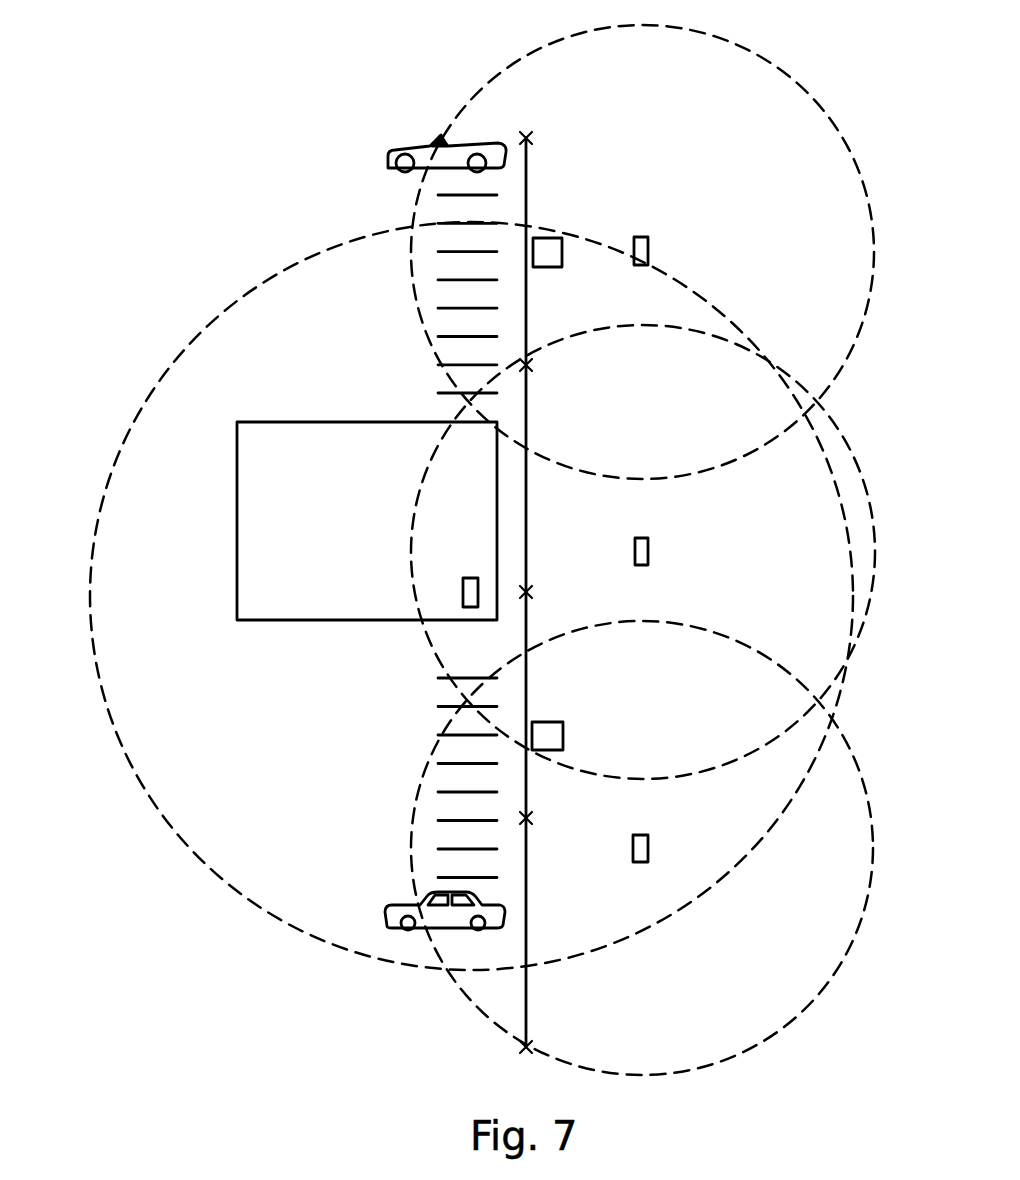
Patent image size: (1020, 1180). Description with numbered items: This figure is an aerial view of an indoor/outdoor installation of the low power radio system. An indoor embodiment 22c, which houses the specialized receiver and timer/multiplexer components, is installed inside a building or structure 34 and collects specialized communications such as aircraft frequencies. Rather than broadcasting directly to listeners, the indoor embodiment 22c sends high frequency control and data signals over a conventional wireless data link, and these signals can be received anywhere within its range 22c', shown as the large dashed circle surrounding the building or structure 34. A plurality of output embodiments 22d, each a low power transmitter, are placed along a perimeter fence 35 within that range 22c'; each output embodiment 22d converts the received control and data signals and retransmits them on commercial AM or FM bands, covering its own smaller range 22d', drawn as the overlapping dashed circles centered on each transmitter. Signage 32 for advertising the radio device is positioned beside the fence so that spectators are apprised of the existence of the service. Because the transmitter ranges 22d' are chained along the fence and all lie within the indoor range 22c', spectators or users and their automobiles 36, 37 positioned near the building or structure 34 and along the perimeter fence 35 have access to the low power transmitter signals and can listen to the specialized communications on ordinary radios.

The indoor embodiment 22c is at (459, 552).
The range of embodiment 22c 22c' is at (455, 596).
The output embodiment 22d is at (665, 549).
The range of embodiment 22d 22d' is at (643, 550).
The signage for advertising radio device 32 is at (562, 252).
The building or structure 34 is at (313, 620).
The perimeter fence 35 is at (526, 643).
The spectator/user and automobile 36 is at (383, 893).
The spectator/user and automobile 37 is at (403, 175).